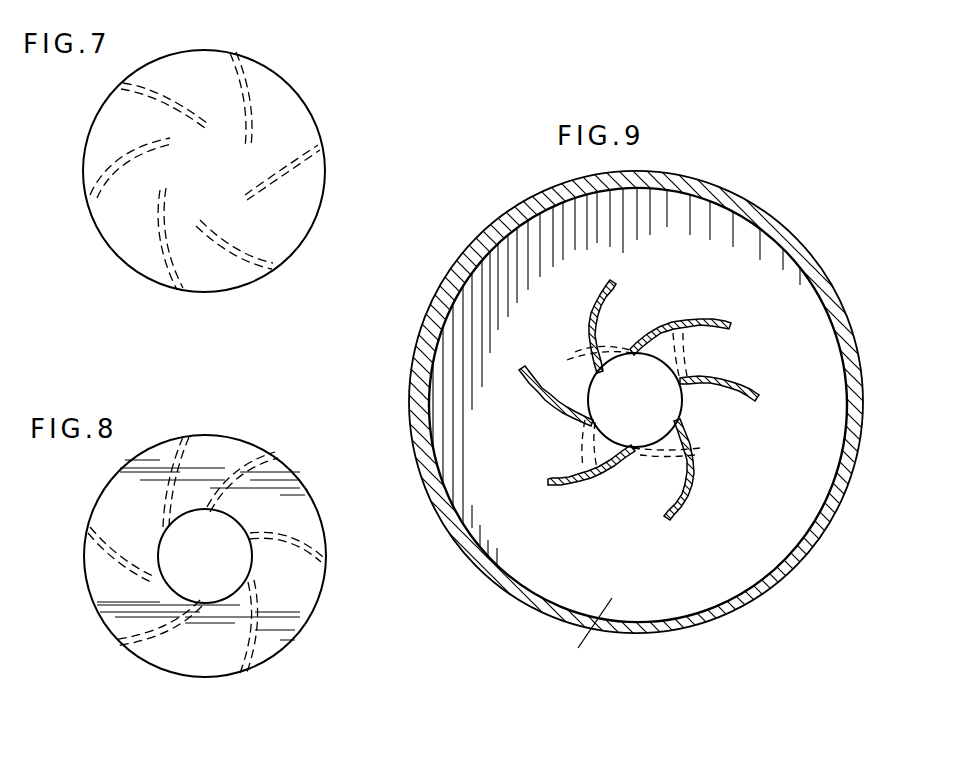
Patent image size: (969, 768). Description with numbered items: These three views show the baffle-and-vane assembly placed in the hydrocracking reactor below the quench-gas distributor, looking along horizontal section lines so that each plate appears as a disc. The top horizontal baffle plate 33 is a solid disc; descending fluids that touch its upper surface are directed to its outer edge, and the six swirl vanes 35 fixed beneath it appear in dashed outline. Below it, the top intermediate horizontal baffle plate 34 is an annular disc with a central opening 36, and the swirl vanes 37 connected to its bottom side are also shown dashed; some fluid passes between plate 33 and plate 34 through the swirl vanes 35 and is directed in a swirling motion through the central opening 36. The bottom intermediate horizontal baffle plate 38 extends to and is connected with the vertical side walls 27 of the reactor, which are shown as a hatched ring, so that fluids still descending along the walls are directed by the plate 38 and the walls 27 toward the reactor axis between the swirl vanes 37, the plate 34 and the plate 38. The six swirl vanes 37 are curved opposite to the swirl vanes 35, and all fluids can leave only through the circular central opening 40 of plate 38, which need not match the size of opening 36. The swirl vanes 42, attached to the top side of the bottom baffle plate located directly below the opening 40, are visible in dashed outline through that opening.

In FIG. 9, the vertical side walls 27 is at (757, 596).
In FIG. 7, the top horizontal baffle plate 33 is at (325, 195).
In FIG. 8, the top intermediate horizontal baffle plate 34 is at (307, 608).
In FIG. 7, the swirl vanes 35 is at (267, 62).
In FIG. 8, the central opening 36 is at (256, 562).
In FIG. 8, the swirl vanes 37 is at (267, 462).
In FIG. 9, the swirl vanes 37 is at (555, 474).
In FIG. 9, the bottom intermediate horizontal baffle plate 38 is at (584, 635).
In FIG. 9, the central opening 40 is at (690, 420).
In FIG. 9, the swirl vanes 42 is at (685, 362).